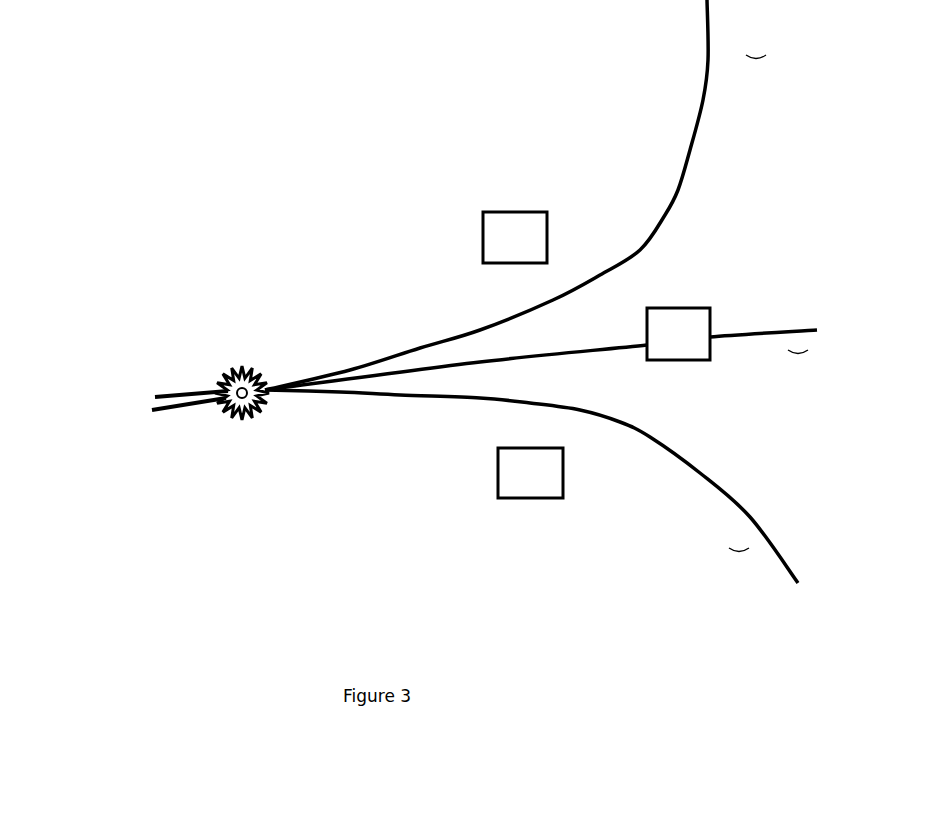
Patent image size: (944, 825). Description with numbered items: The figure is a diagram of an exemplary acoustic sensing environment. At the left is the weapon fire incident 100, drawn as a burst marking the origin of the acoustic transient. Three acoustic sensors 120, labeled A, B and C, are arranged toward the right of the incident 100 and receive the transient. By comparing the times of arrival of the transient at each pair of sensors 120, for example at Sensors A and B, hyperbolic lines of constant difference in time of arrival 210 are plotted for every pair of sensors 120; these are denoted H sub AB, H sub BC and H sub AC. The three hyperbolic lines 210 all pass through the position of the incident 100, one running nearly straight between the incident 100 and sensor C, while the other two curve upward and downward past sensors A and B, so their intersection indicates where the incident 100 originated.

The weapon fire incident 100 is at (233, 364).
The acoustic sensors 120 is at (539, 263).
The hyperbolic lines of constant difference in time of arrival 210 is at (541, 291).